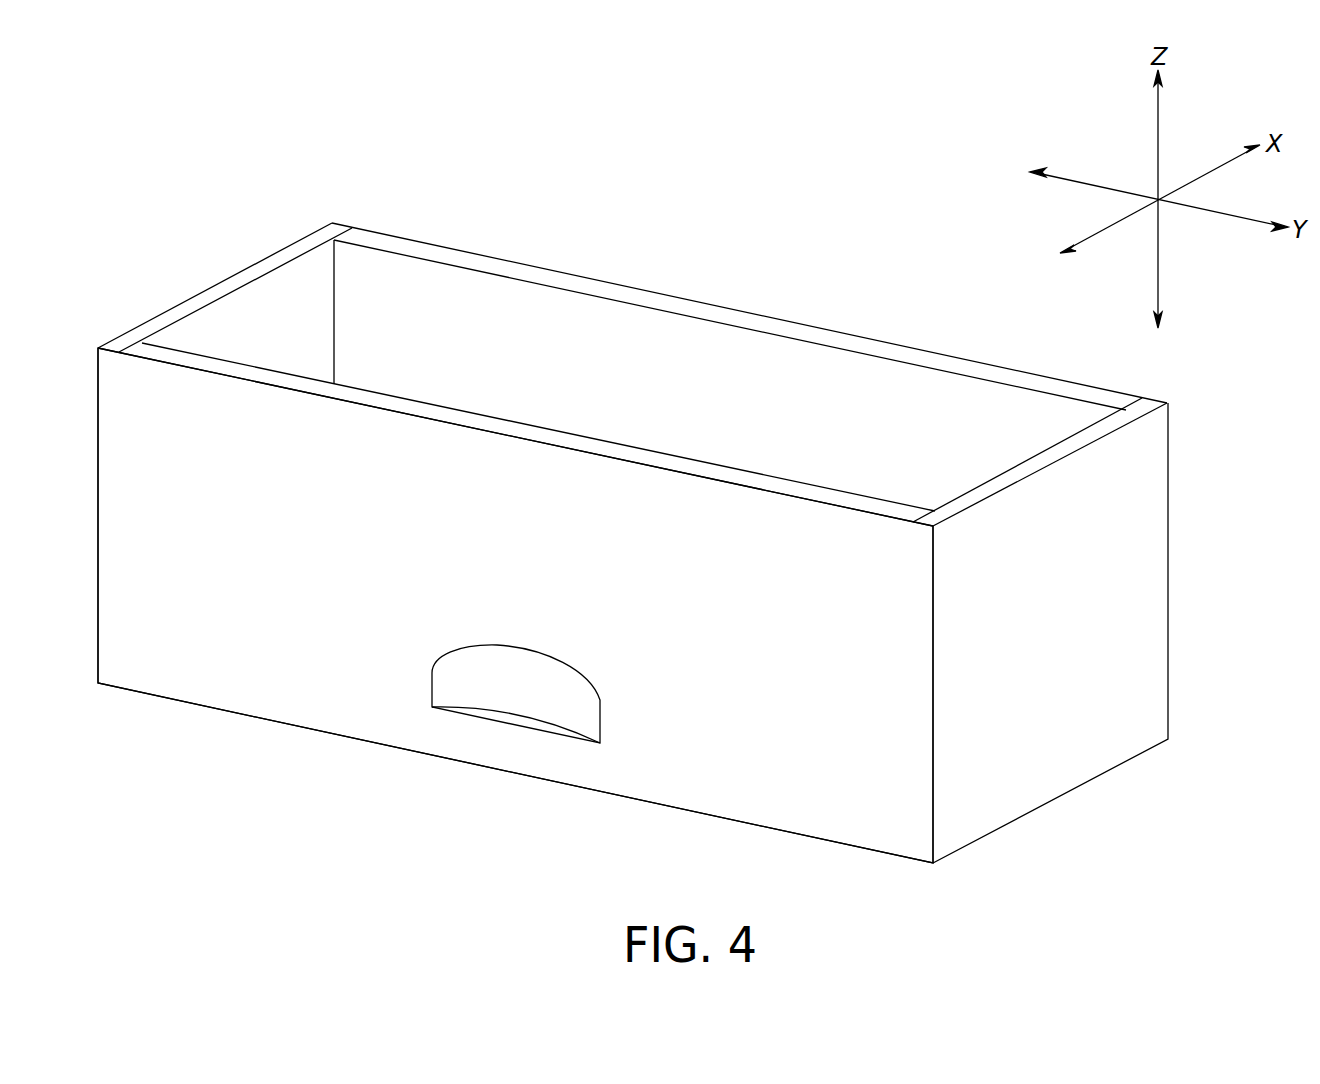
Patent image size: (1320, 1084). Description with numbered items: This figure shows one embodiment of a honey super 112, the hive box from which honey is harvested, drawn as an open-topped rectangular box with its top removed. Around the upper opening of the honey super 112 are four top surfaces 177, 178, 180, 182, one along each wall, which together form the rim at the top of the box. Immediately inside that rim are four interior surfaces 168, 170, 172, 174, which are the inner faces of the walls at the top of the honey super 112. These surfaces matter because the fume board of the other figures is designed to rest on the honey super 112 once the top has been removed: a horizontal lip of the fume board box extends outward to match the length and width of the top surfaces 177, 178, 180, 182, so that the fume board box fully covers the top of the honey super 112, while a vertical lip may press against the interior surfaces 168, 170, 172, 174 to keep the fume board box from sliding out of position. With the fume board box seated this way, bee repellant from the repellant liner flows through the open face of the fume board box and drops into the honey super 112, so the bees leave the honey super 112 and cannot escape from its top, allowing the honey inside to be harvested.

The honey super 112 is at (258, 700).
The interior surface 168 is at (753, 478).
The top surface 177 is at (630, 458).
The top surface 182 is at (168, 318).
The interior surface 174 is at (232, 323).
The top surface 180 is at (450, 258).
The interior surface 172 is at (545, 327).
The interior surface 170 is at (1013, 465).
The top surface 178 is at (1152, 404).